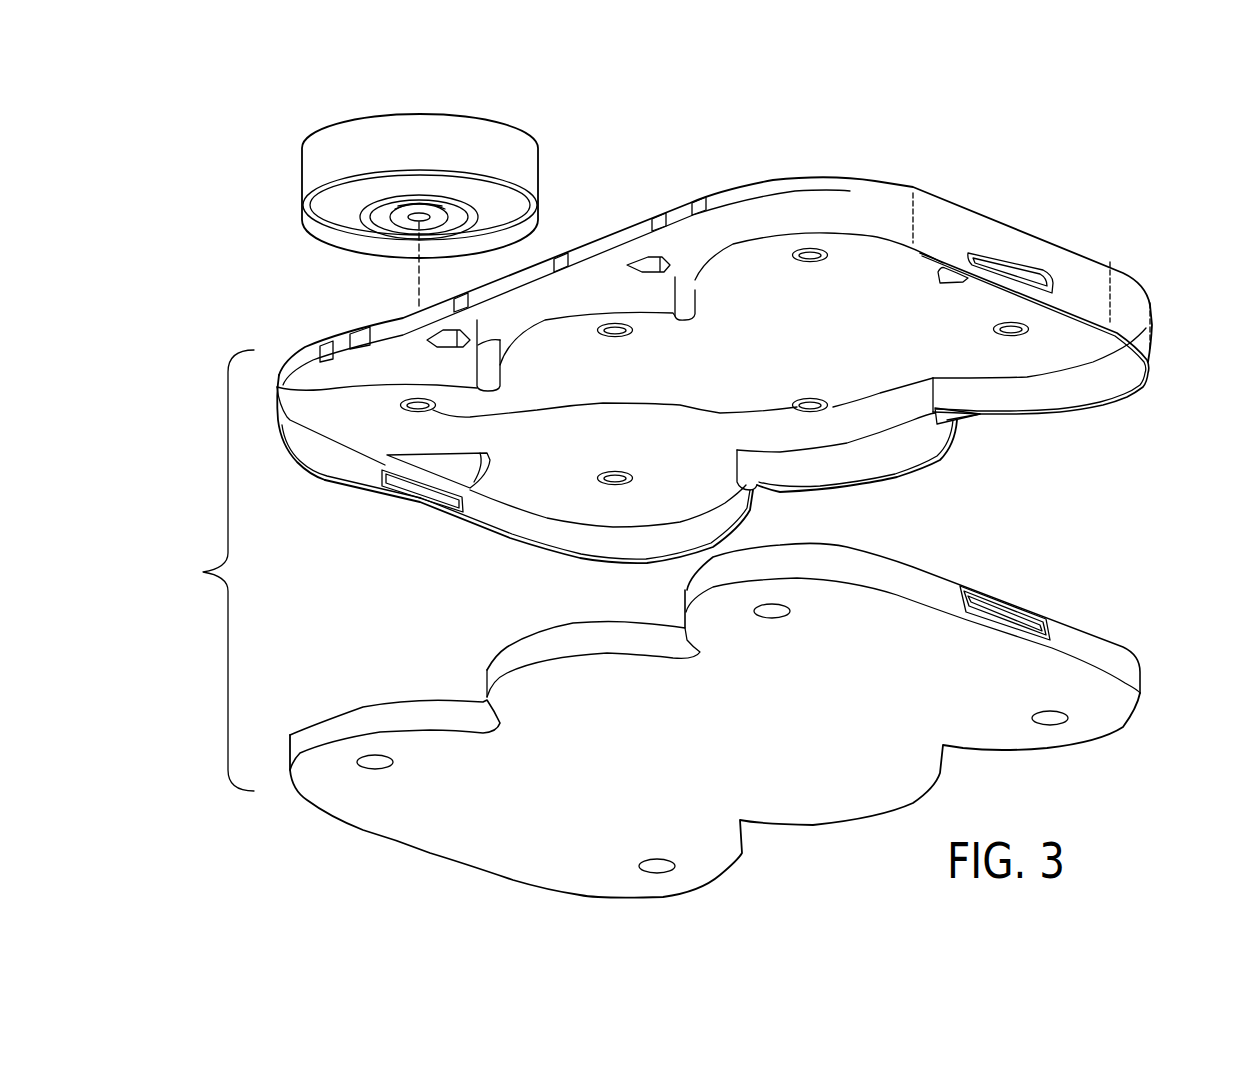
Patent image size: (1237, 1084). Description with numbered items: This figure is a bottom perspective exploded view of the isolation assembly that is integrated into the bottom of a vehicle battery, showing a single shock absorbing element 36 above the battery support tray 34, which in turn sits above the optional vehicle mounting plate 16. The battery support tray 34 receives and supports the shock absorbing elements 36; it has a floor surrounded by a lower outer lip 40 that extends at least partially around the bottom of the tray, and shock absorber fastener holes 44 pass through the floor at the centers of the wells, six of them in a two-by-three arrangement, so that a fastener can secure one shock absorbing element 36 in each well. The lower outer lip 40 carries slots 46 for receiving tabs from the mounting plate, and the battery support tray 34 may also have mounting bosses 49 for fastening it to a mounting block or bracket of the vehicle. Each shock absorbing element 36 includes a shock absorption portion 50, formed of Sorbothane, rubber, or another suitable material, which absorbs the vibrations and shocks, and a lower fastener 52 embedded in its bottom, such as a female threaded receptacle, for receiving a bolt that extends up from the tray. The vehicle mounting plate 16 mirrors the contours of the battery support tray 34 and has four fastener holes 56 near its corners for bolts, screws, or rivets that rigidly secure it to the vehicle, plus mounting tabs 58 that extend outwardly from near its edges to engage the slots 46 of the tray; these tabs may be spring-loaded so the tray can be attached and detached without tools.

The vehicle mounting plate 16 is at (694, 704).
The battery support tray 34 is at (268, 331).
The shock absorbing element 36 is at (359, 208).
The lower outer lip 40 is at (283, 453).
The shock absorber fastener hole 44 is at (613, 334).
The slot 46 is at (1013, 270).
The mounting boss 49 is at (622, 255).
The shock absorption portion 50 is at (322, 166).
The lower fastener 52 is at (415, 219).
The fastener hole 56 is at (777, 610).
The mounting tab 58 is at (1010, 610).